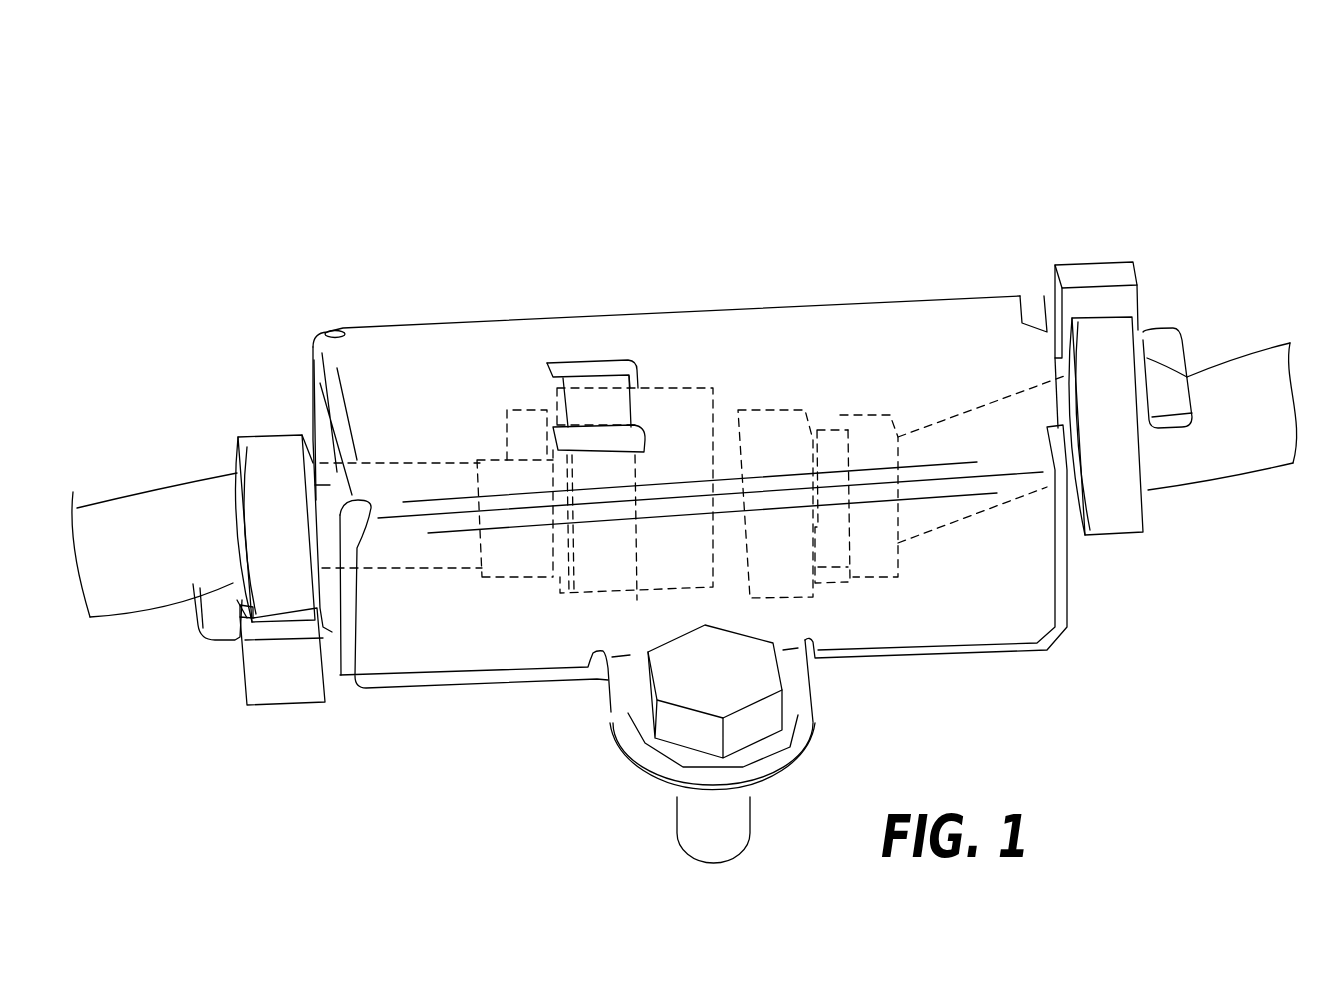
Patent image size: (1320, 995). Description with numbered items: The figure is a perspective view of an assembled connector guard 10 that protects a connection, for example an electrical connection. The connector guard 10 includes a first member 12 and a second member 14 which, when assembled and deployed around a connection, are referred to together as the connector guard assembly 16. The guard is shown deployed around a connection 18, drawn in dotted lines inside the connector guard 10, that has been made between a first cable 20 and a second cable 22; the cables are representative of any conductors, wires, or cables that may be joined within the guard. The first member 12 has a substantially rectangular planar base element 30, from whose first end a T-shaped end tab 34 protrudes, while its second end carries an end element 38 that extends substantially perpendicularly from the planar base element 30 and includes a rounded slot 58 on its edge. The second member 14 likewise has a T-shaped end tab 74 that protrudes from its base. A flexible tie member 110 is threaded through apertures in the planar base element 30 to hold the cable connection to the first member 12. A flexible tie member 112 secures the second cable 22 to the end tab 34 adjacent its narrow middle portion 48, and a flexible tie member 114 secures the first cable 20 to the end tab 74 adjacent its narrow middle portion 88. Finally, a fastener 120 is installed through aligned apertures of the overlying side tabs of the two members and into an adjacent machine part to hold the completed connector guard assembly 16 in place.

The connector guard 10 is at (475, 238).
The first member 12 is at (733, 340).
The second member 14 is at (937, 658).
The connector guard assembly 16 is at (1117, 396).
The connection 18 is at (843, 403).
The first cable 20 is at (145, 483).
The second cable 22 is at (1238, 478).
The planar base element 30 is at (415, 373).
The end tab 34 is at (1203, 339).
The end element 38 is at (320, 413).
The narrow middle portion 48 is at (1192, 370).
The rounded slot 58 is at (320, 483).
The end tab 74 is at (185, 602).
The narrow middle portion 88 is at (240, 602).
The flexible tie member 110 is at (595, 407).
The flexible tie member 112 is at (1120, 515).
The flexible tie member 114 is at (285, 593).
The fastener 120 is at (678, 673).